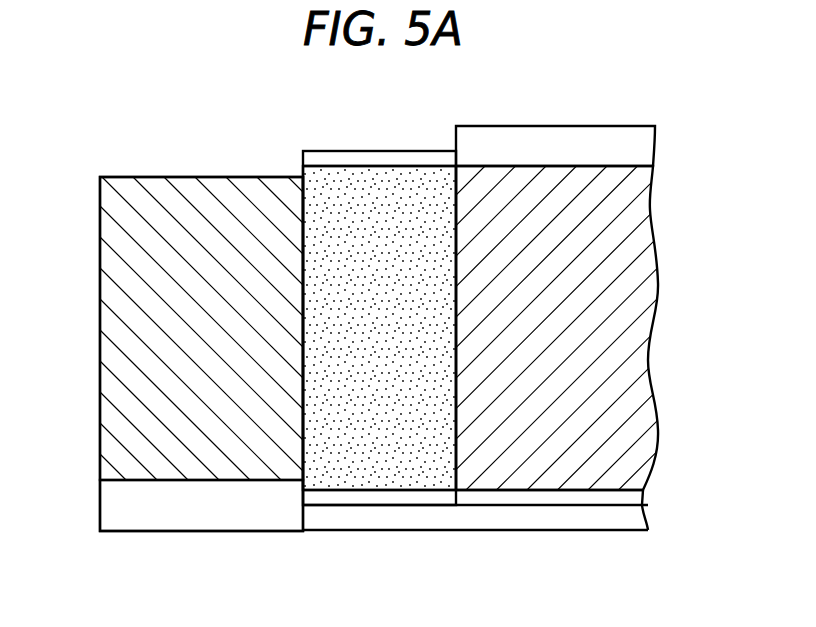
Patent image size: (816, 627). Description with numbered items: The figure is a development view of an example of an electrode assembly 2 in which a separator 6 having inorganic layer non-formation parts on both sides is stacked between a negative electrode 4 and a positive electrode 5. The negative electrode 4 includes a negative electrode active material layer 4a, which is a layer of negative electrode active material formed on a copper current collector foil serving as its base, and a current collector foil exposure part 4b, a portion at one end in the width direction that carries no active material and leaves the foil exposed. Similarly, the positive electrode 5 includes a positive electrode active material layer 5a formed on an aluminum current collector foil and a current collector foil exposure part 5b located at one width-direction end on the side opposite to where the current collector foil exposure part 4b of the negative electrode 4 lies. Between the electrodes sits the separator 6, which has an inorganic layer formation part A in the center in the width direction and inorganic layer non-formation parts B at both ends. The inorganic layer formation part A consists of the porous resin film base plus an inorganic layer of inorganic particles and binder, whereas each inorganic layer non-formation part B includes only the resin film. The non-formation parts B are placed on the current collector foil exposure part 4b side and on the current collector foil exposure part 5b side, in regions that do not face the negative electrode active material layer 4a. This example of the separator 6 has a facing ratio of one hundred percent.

The electrode assembly 2 is at (625, 96).
The negative electrode 4 is at (594, 296).
The negative electrode active material layer 4a is at (649, 282).
The current collector foil exposure part 4b is at (649, 143).
The positive electrode 5 is at (172, 322).
The positive electrode active material layer 5a is at (117, 347).
The current collector foil exposure part 5b is at (117, 504).
The separator 6 is at (447, 338).
The inorganic layer formation part A is at (320, 342).
The inorganic layer non-formation part B is at (320, 160).